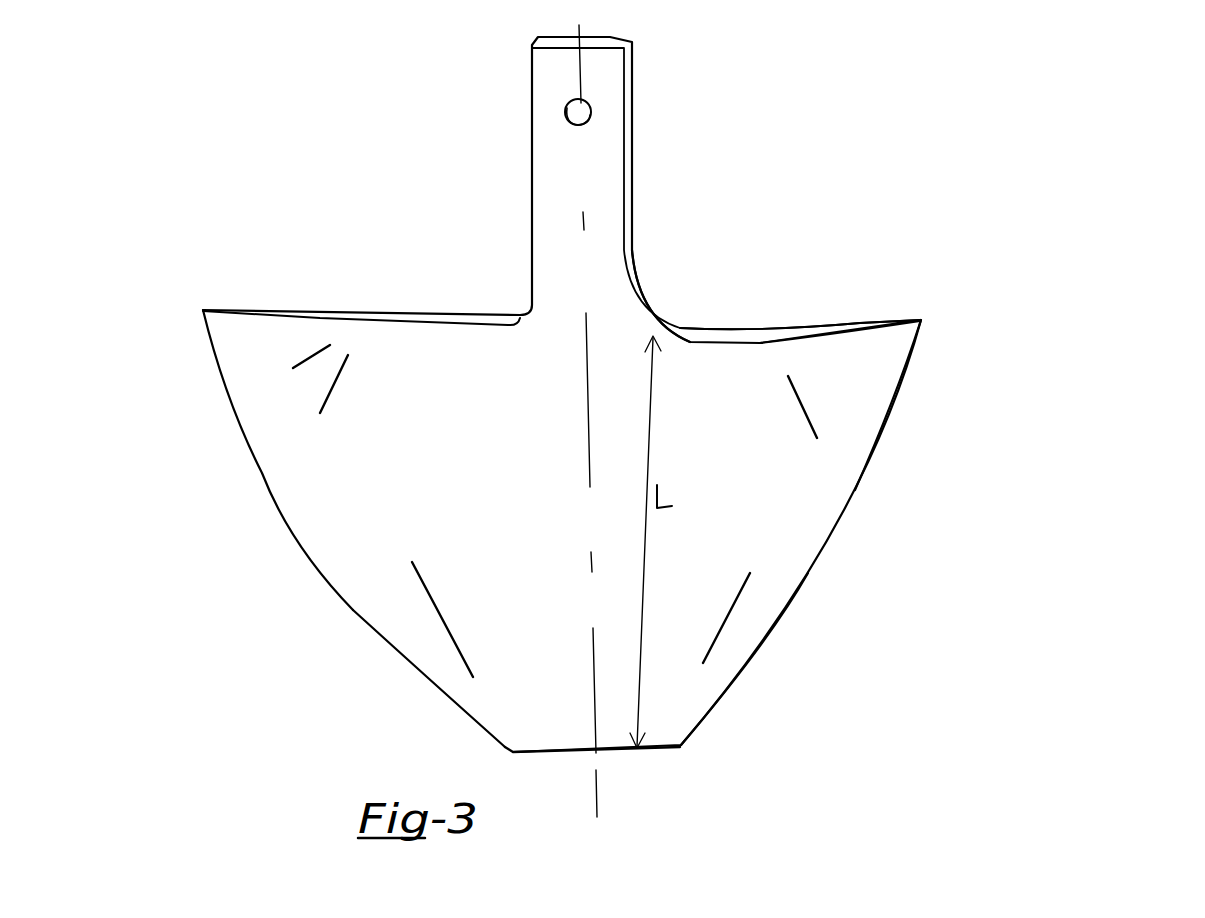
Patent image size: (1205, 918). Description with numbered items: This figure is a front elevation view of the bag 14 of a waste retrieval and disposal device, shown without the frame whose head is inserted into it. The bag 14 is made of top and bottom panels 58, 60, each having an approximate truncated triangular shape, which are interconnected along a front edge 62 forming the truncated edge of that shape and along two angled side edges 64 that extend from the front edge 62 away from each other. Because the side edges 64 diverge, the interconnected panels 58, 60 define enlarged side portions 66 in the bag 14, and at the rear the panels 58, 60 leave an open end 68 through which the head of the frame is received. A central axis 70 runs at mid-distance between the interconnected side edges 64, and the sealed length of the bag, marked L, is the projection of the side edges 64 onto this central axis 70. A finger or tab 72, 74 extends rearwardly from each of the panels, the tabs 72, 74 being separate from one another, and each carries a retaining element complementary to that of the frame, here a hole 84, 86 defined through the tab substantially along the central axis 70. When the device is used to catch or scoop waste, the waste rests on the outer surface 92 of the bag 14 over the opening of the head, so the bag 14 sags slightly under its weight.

The bag 14 is at (642, 432).
The top panel 58 is at (861, 382).
The bottom panel 60 is at (872, 323).
The front edge 62 is at (645, 752).
The side edges 64 is at (300, 545).
The enlarged side portions 66 is at (300, 467).
The open end 68 is at (355, 290).
The central axis 70 is at (585, 223).
The tab 72 is at (550, 260).
The tab 74 is at (665, 330).
The hole 84 is at (696, 77).
The hole 86 is at (578, 112).
The outer surface 92 is at (505, 497).